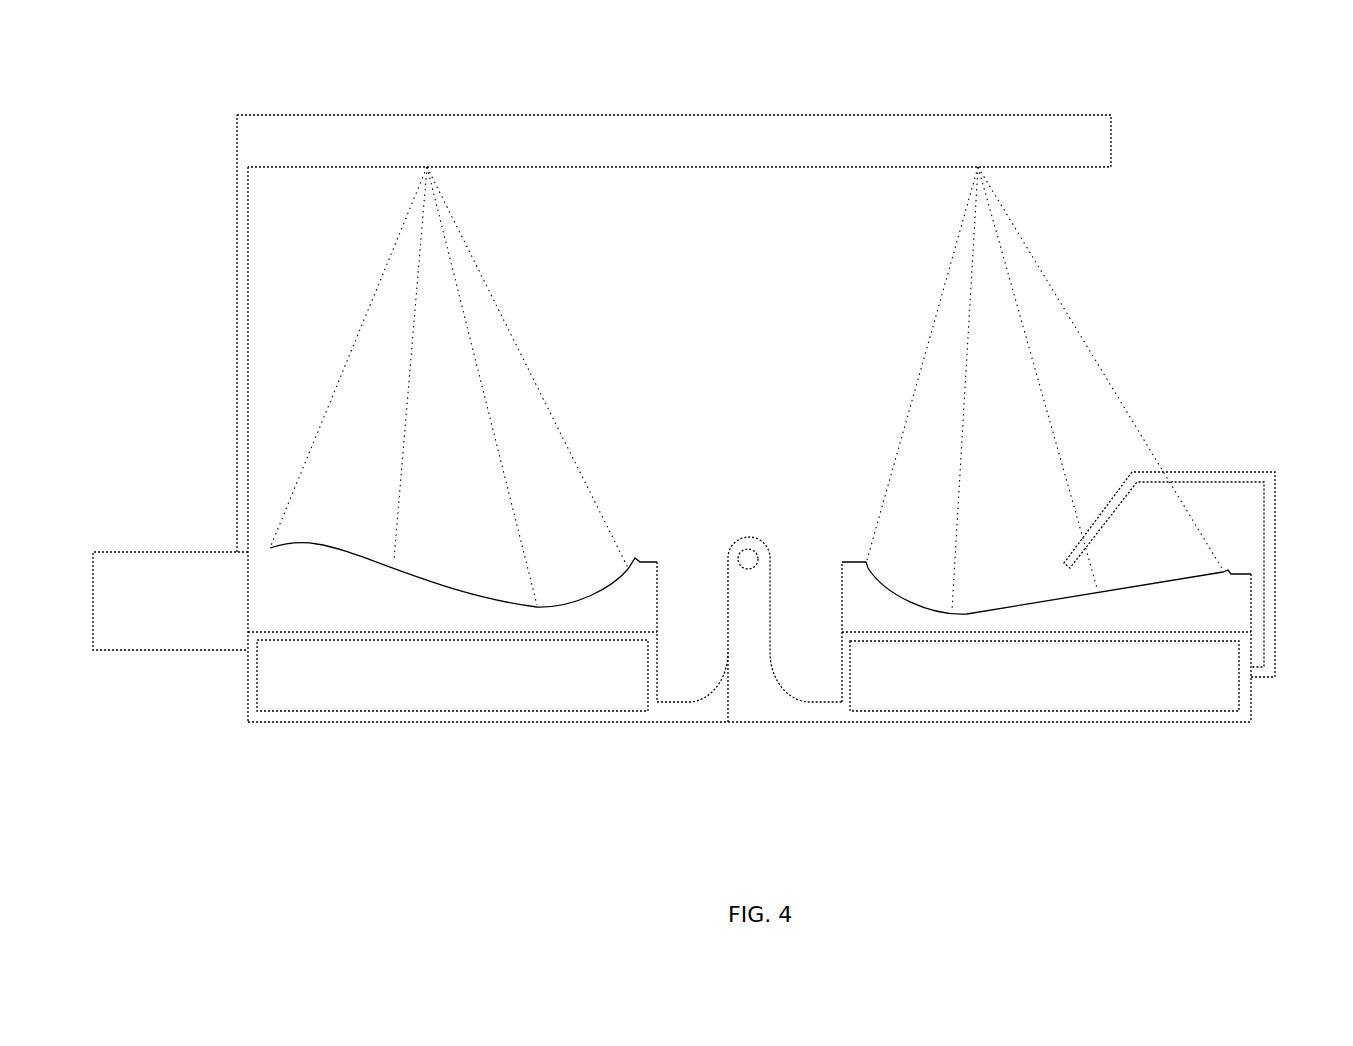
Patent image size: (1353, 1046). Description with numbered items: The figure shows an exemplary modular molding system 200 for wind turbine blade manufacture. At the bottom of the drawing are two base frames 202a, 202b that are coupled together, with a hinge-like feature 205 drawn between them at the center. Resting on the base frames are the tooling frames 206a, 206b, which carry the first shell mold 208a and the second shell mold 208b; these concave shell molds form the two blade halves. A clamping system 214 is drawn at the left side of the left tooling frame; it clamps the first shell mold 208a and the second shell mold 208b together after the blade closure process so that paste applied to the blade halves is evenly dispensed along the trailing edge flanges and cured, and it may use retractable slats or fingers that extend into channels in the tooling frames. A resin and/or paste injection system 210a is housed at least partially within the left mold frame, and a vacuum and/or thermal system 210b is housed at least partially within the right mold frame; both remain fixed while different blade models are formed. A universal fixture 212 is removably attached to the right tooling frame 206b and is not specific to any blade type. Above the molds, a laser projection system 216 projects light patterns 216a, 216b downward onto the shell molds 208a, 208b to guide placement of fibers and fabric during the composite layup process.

The modular molding system 200 is at (286, 58).
The laser projection system 216 is at (674, 141).
The light pattern 216a is at (500, 290).
The light pattern 216b is at (1057, 265).
The clamping system 214 is at (170, 601).
The tooling frame 206a is at (268, 677).
The tooling frame 206b is at (1227, 687).
The first shell mold 208a is at (485, 593).
The second shell mold 208b is at (980, 613).
The resin and/or paste injection system 210a is at (452, 675).
The vacuum and/or thermal system 210b is at (1044, 676).
The base frame 202a is at (412, 718).
The base frame 202b is at (1100, 717).
The central pivot post 205 is at (755, 593).
The universal fixtures 212 is at (1230, 472).